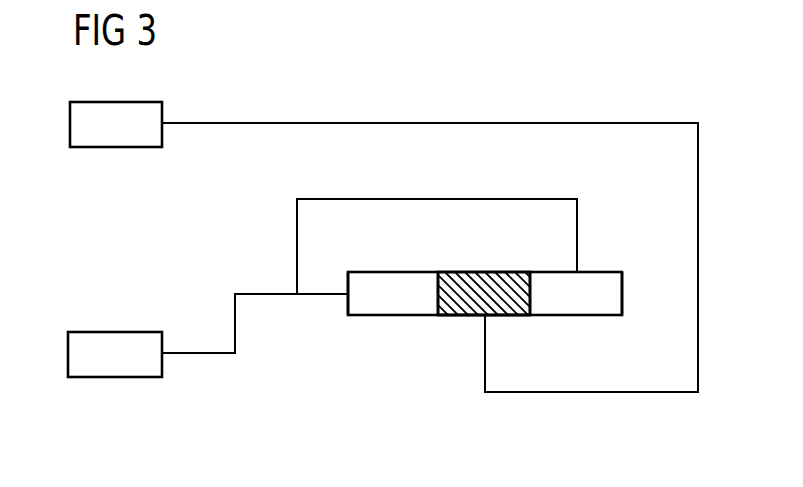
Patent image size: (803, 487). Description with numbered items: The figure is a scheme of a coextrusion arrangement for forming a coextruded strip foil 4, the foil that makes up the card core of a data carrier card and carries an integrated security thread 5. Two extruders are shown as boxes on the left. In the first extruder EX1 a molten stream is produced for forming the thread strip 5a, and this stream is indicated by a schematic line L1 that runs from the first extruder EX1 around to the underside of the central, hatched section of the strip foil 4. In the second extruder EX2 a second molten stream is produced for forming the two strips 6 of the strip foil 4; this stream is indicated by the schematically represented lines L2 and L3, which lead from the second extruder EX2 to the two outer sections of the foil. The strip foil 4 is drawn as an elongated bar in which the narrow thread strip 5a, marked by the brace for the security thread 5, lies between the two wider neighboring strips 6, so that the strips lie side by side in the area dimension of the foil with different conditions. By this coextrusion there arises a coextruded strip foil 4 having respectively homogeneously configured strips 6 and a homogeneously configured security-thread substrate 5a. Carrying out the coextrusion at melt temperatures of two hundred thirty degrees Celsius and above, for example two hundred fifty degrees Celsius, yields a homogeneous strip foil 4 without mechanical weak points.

The strip foil 4 is at (506, 294).
The security thread 5 is at (530, 263).
The thread strip 5a is at (463, 315).
The strip 6 is at (397, 280).
The schematic line L1 is at (203, 123).
The schematic line L2 is at (452, 199).
The schematic line L3 is at (190, 353).
The first extruder EX1 is at (116, 124).
The extruder EX2 is at (115, 354).